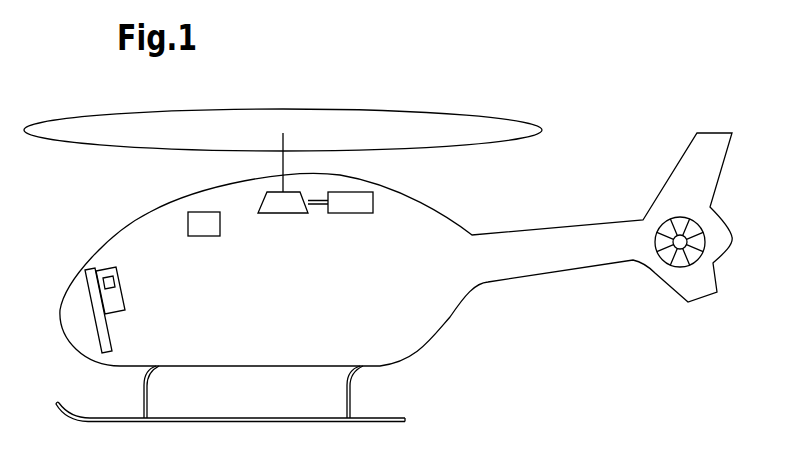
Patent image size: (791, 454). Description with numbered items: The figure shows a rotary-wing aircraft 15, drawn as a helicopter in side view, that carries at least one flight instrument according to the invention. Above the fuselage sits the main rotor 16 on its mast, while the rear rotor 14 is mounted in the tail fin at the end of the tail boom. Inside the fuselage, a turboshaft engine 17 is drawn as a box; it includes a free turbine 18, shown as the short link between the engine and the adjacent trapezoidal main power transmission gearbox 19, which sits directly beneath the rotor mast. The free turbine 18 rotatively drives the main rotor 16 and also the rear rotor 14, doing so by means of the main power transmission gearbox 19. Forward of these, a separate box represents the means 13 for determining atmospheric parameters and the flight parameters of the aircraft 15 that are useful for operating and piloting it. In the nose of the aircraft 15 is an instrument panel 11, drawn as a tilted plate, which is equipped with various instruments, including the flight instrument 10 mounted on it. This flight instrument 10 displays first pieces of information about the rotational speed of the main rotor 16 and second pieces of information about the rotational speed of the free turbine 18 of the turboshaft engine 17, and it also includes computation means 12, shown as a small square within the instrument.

The flight instrument 10 is at (123, 277).
The instrument panel 11 is at (111, 338).
The computation means 12 is at (116, 278).
The means for determining atmospheric parameters and flight parameters 13 is at (207, 237).
The rear rotor 14 is at (673, 217).
The rotary-wing aircraft 15 is at (497, 352).
The main rotor 16 is at (460, 124).
The turboshaft engine 17 is at (358, 207).
The free turbine 18 is at (313, 204).
The main power transmission gearbox 19 is at (278, 208).